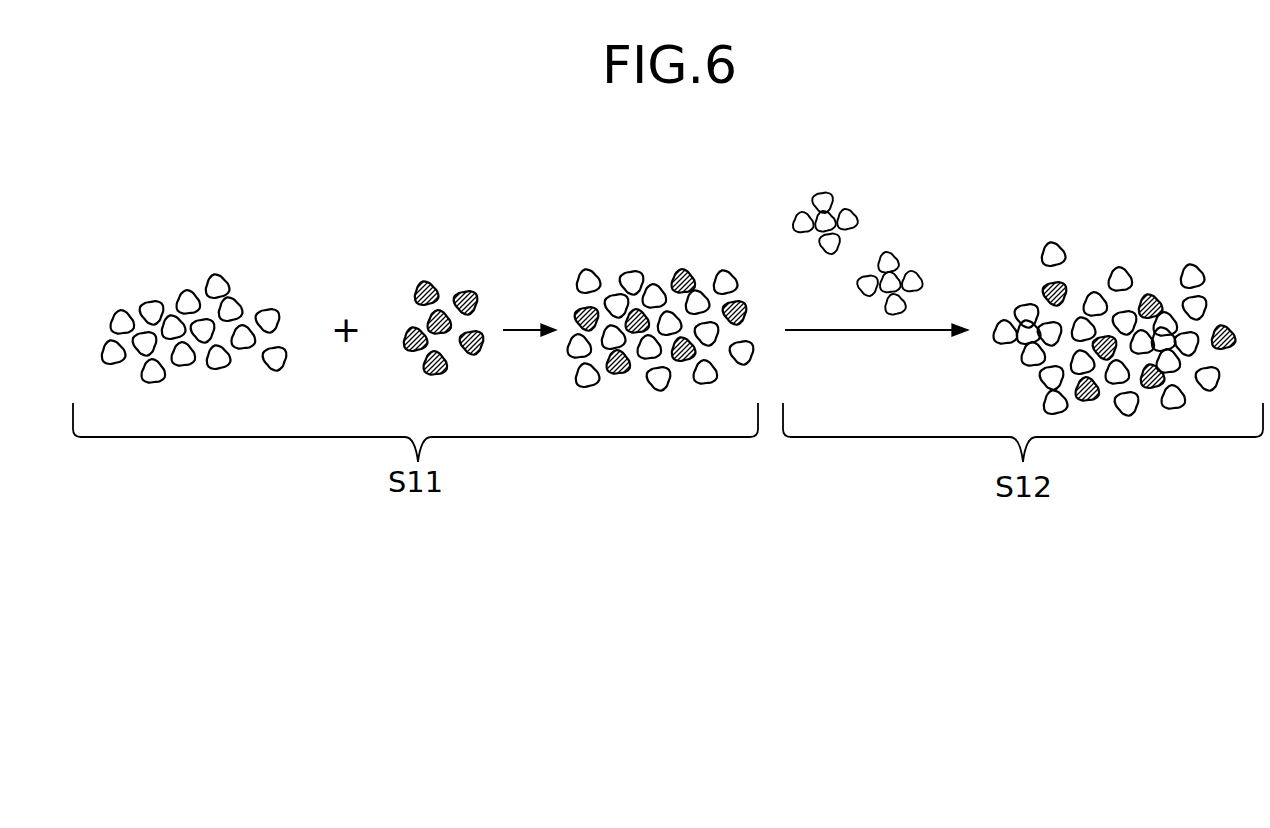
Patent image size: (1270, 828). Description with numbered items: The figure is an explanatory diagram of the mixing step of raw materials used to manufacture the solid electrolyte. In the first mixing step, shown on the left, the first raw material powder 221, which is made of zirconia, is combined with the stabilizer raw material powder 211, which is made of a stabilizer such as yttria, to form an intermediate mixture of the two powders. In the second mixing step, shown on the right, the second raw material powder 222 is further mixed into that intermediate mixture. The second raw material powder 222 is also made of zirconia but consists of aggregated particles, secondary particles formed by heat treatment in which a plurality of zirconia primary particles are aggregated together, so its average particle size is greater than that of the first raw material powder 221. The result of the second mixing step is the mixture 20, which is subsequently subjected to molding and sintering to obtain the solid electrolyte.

The first raw material powder 221 is at (197, 255).
The stabilizer raw material powder 211 is at (443, 248).
The second raw material powder 222 is at (855, 190).
The mixture 20 is at (1143, 212).